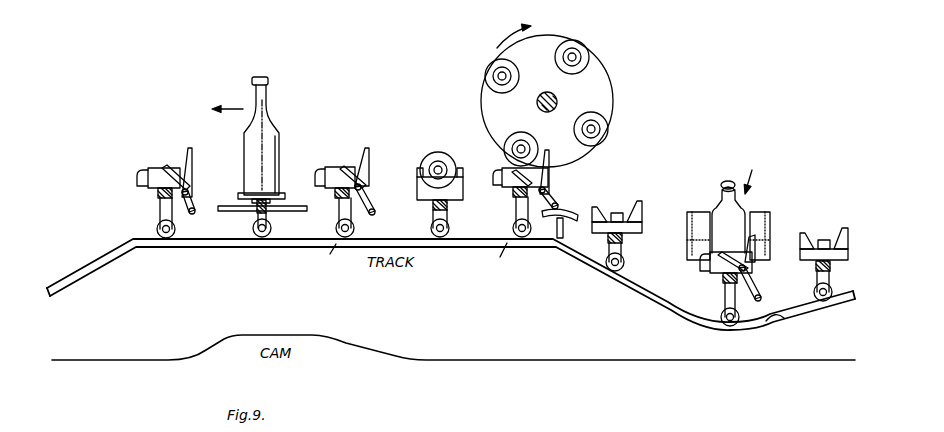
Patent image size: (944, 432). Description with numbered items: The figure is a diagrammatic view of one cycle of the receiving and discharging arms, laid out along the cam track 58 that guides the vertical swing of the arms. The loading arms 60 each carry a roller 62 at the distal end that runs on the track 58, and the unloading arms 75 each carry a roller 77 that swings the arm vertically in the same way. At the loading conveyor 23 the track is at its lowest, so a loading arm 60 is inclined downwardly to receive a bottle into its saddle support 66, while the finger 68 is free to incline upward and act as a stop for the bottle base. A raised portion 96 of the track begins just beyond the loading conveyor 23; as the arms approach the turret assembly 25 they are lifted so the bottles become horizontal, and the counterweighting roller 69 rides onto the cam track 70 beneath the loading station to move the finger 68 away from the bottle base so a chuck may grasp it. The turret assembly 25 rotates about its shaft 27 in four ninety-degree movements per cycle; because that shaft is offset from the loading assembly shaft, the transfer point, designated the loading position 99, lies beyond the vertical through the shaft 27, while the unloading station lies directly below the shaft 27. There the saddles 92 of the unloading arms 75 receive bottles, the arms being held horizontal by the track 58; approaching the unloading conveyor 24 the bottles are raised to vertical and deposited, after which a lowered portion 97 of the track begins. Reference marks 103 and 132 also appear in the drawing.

The loading conveyor 23 is at (756, 222).
The unloading conveyor 24 is at (290, 206).
The turret assembly 25 is at (576, 89).
The shaft of the turret assembly 27 is at (556, 98).
The cam track 58 is at (492, 258).
The loading arm 60 is at (157, 195).
The roller 62 is at (175, 230).
The saddle support 66 is at (193, 155).
The finger 68 is at (357, 170).
The roller 69 is at (374, 213).
The cam track 70 is at (576, 212).
The unloading arm 75 is at (267, 210).
The roller 77 is at (254, 230).
The saddle 92 is at (240, 196).
The raised portion 96 is at (319, 258).
The lowered portion 97 is at (783, 326).
The loading position 99 is at (490, 150).
The turret hub 103 is at (544, 95).
The turret disc 132 is at (550, 40).